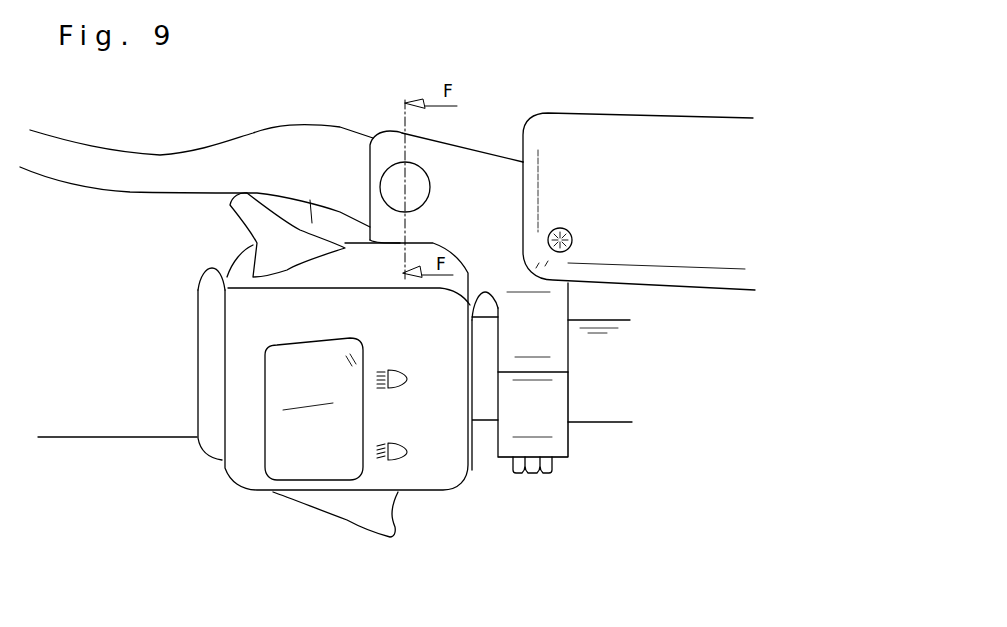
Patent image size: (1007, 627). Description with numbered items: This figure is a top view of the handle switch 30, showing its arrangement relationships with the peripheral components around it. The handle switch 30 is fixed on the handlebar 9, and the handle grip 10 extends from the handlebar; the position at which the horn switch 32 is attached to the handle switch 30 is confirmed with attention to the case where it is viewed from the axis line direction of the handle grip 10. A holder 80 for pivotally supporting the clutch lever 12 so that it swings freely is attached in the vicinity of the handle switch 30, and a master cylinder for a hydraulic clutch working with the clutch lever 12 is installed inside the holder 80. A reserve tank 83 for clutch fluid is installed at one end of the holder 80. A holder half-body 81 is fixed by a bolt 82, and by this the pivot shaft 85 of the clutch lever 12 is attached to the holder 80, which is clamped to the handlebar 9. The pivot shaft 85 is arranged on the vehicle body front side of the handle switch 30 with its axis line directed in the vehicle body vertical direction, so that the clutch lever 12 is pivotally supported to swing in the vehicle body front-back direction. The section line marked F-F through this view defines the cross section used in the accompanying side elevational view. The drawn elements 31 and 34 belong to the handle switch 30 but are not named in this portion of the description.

The handlebar 9 is at (610, 415).
The handle grip 10 is at (105, 415).
The clutch lever 12 is at (170, 168).
The handle switch 30 is at (462, 522).
The dimmer switch 31 is at (280, 445).
The horn switch 32 is at (368, 508).
The operating lever 34 is at (258, 213).
The holder 80 is at (483, 165).
The holder half-body 81 is at (567, 433).
The bolt 82 is at (535, 474).
The reserve tank 83 is at (637, 130).
The pivot shaft 85 is at (390, 182).